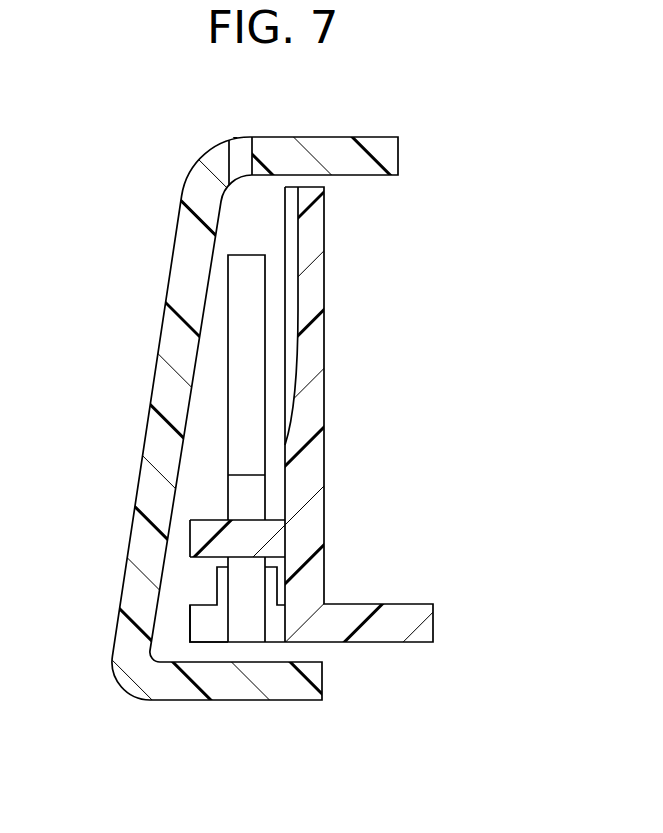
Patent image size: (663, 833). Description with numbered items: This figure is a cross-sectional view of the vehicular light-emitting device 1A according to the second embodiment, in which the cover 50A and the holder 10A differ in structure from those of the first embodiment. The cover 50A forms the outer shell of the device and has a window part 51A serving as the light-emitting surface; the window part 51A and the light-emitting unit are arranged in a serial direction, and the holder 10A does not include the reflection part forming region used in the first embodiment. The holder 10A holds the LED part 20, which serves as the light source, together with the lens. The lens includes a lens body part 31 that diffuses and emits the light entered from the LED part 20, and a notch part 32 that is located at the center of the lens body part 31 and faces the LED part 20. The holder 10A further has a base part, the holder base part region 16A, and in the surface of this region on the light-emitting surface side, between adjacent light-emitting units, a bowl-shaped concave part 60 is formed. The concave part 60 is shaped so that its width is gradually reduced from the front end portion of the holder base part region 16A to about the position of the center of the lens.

The vehicular light-emitting device 1A is at (331, 422).
The holder 10A is at (331, 422).
The holder base part region 16A is at (308, 348).
The LED part 20 is at (210, 623).
The lens body part 31 is at (174, 366).
The notch part 32 is at (242, 500).
The cover 50A is at (331, 420).
The window part 51A is at (233, 160).
The concave part 60 is at (293, 205).